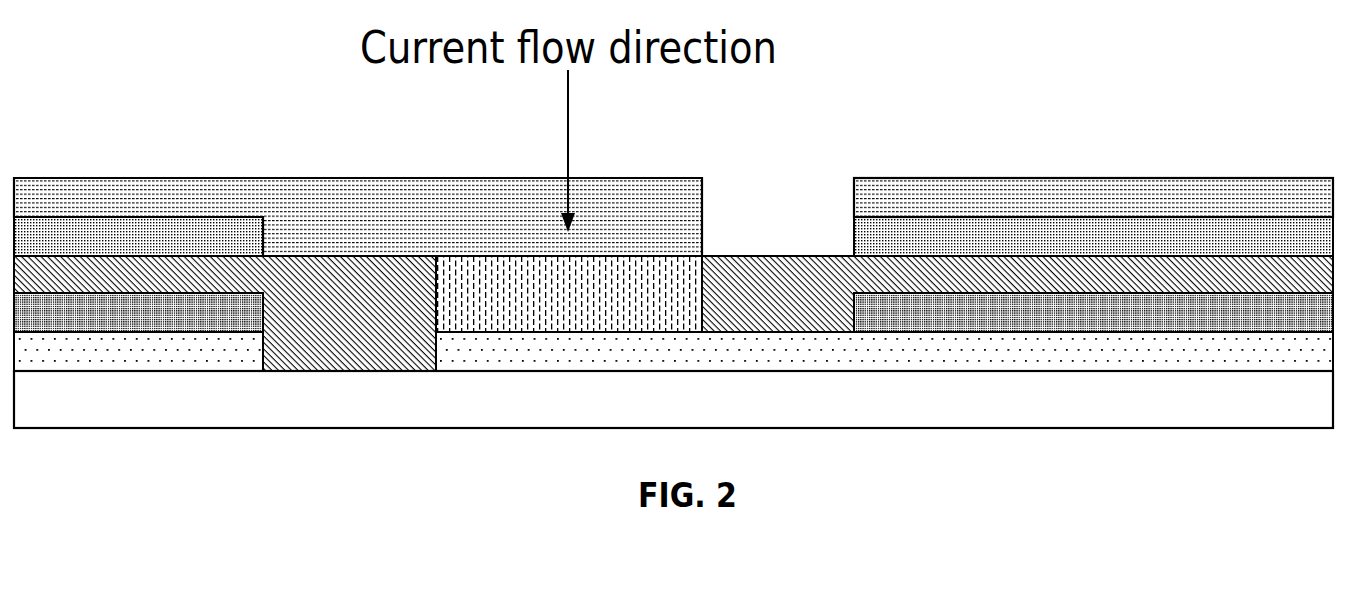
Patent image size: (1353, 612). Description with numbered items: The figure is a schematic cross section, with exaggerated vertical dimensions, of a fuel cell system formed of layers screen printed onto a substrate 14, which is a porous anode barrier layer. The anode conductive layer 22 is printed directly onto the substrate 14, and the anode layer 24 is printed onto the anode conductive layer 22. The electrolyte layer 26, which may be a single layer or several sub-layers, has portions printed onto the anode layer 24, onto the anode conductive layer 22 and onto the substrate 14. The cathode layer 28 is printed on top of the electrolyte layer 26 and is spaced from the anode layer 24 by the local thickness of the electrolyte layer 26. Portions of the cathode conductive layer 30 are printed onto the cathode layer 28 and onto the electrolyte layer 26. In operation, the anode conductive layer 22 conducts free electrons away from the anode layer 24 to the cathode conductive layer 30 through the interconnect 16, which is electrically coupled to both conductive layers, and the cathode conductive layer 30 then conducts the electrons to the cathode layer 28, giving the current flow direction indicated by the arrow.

The substrate 14 is at (742, 416).
The interconnect 16 is at (585, 328).
The anode conductive layer 22 is at (203, 368).
The anode layer 24 is at (218, 330).
The electrolyte layer 26 is at (1235, 292).
The cathode layer 28 is at (232, 254).
The cathode conductive layer 30 is at (487, 228).